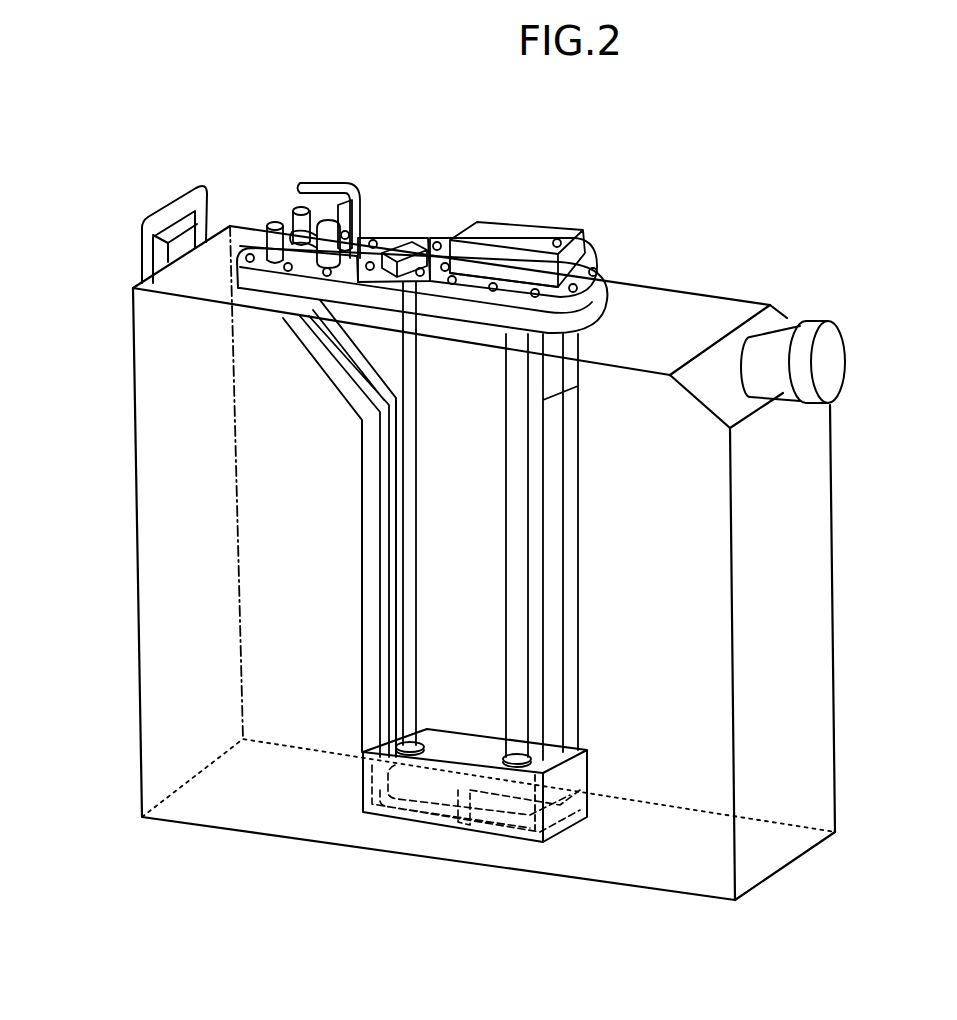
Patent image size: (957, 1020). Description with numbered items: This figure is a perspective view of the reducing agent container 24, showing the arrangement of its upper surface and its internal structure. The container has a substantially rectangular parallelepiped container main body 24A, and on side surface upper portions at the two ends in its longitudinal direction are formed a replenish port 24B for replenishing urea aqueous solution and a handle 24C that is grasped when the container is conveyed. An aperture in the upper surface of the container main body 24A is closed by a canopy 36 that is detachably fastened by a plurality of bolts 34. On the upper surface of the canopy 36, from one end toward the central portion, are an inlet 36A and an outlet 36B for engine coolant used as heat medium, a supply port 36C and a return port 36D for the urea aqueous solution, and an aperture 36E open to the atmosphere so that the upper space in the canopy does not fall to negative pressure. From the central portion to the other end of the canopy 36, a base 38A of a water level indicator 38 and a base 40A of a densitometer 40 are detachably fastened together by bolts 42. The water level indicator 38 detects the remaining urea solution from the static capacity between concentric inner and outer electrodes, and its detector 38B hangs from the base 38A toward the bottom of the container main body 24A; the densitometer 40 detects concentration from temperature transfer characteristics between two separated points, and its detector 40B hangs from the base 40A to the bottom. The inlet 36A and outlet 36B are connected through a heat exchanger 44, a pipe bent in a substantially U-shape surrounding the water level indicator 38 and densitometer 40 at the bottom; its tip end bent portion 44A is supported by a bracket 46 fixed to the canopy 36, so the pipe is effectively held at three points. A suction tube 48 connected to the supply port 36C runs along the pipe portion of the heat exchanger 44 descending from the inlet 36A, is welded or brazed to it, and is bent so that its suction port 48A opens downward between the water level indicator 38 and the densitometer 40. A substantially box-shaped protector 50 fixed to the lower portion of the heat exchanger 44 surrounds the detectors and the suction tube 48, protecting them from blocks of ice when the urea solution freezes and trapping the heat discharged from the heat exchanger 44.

The reducing agent container 24 is at (812, 275).
The container main body 24A is at (815, 550).
The replenish port 24B is at (826, 360).
The handle 24C is at (142, 240).
The bolts 34 is at (283, 292).
The canopy 36 is at (253, 284).
The inlet 36A is at (277, 220).
The outlet 36B is at (300, 210).
The supply port 36C is at (322, 222).
The return port 36D is at (361, 213).
The aperture 36E is at (347, 183).
The water level indicator 38 is at (418, 228).
The base 38A is at (404, 286).
The detector 38B is at (413, 462).
The densitometer 40 is at (587, 223).
The base 40A is at (590, 265).
The detector 40B is at (530, 810).
The bolts 42 is at (440, 244).
The heat exchanger 44 is at (362, 565).
The tip end bent portion 44A is at (542, 347).
The bracket 46 is at (563, 377).
The suction tube 48 is at (328, 342).
The suction port 48A is at (460, 812).
The protector 50 is at (404, 820).